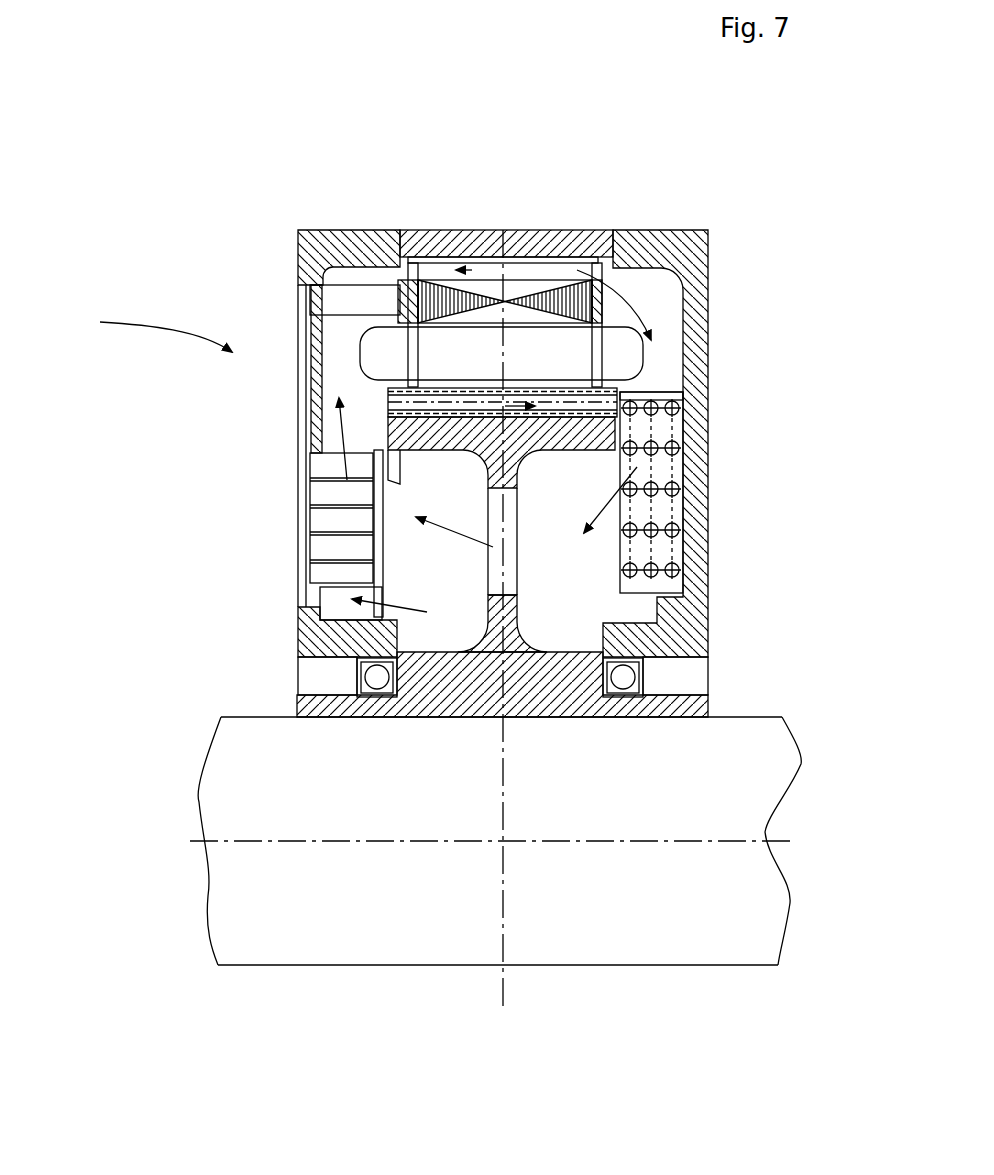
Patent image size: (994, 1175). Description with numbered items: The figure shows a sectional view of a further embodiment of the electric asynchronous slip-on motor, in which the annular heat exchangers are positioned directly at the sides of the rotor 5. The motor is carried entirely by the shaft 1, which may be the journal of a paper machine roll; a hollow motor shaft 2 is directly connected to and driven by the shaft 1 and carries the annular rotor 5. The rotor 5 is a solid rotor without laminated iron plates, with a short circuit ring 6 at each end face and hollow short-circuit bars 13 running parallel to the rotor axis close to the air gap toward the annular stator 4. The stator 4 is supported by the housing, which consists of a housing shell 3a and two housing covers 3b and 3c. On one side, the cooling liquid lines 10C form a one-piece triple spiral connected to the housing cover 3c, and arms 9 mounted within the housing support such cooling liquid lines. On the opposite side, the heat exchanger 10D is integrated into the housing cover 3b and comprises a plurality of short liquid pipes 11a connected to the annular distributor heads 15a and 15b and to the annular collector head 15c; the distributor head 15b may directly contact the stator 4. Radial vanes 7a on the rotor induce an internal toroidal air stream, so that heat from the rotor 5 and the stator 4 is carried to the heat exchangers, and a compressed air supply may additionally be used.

The shaft 1 is at (761, 775).
The hollow motor shaft 2 is at (665, 710).
The housing shell 3a is at (485, 248).
The housing cover 3b is at (300, 266).
The housing cover 3c is at (692, 405).
The stator 4 is at (520, 307).
The rotor 5 is at (537, 430).
The short circuit ring 6 is at (398, 453).
The radial vanes 7a is at (503, 574).
The arms 9 is at (660, 397).
The cooling liquid lines 10C is at (678, 537).
The heat exchanger 10D is at (131, 316).
The short liquid pipes 11a is at (325, 495).
The hollow short-circuit bars 13 is at (557, 387).
The annular distributor head 15a is at (383, 547).
The annular distributor head 15b is at (400, 315).
The annular collector head 15c is at (302, 590).